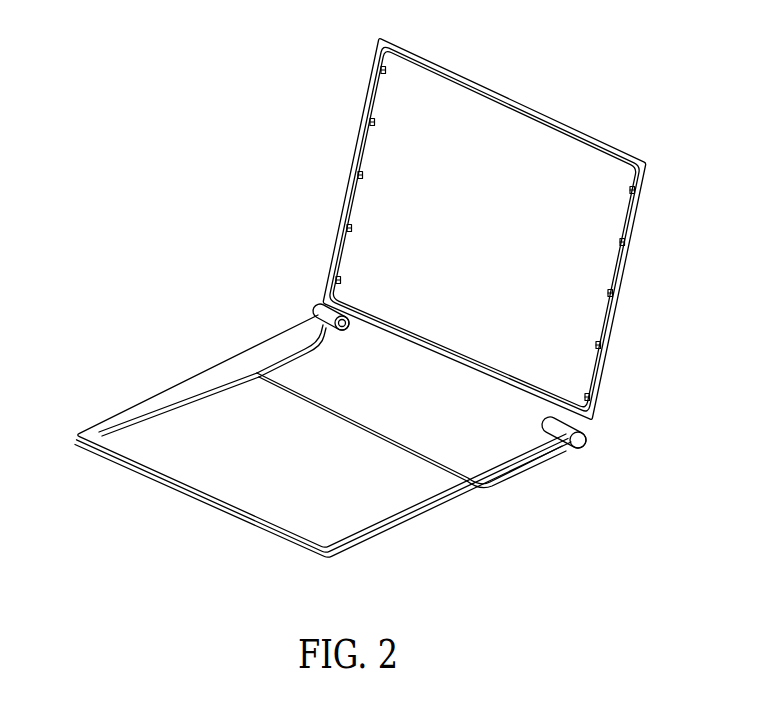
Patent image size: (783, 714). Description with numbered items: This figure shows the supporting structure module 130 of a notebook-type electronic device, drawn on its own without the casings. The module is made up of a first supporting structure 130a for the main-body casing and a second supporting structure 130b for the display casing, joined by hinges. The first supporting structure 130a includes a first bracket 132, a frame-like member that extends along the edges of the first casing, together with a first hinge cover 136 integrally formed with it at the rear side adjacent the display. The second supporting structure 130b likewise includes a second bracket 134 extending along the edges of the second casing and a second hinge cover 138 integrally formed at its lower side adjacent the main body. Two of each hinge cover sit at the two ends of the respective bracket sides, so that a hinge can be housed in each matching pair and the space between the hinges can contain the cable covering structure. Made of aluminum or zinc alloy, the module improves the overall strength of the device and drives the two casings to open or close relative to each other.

The supporting structure module 130 is at (190, 282).
The first supporting structure 130a is at (418, 430).
The second supporting structure 130b is at (541, 229).
The first bracket 132 is at (507, 472).
The second bracket 134 is at (618, 305).
The first hinge cover 136 is at (593, 424).
The second hinge cover 138 is at (557, 418).